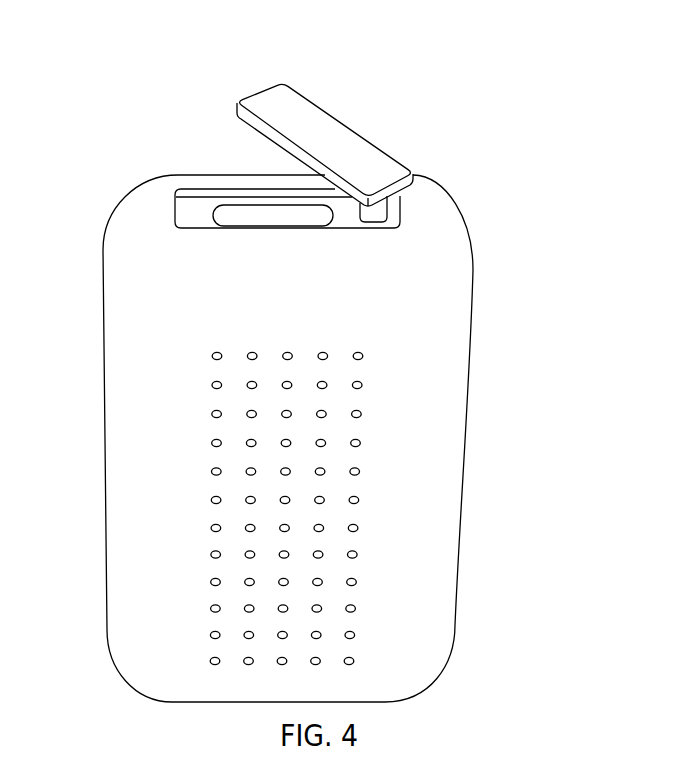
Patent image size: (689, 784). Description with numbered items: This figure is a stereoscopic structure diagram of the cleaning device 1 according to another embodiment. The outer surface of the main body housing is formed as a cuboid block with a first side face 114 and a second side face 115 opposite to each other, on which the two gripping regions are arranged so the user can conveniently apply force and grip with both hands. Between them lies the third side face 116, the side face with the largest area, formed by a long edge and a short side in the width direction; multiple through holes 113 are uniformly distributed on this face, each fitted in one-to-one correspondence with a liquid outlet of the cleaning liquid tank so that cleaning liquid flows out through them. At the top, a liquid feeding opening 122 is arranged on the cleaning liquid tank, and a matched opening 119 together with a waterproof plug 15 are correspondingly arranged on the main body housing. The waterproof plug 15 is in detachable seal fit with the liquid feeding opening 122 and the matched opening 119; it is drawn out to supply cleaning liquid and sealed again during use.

The cleaning device 1 is at (235, 5).
The waterproof plug 15 is at (300, 130).
The through holes 113 is at (358, 381).
The first side face 114 is at (102, 373).
The second side face 115 is at (468, 392).
The third side face 116 is at (155, 587).
The matched opening 119 is at (175, 184).
The liquid feeding opening 122 is at (293, 218).